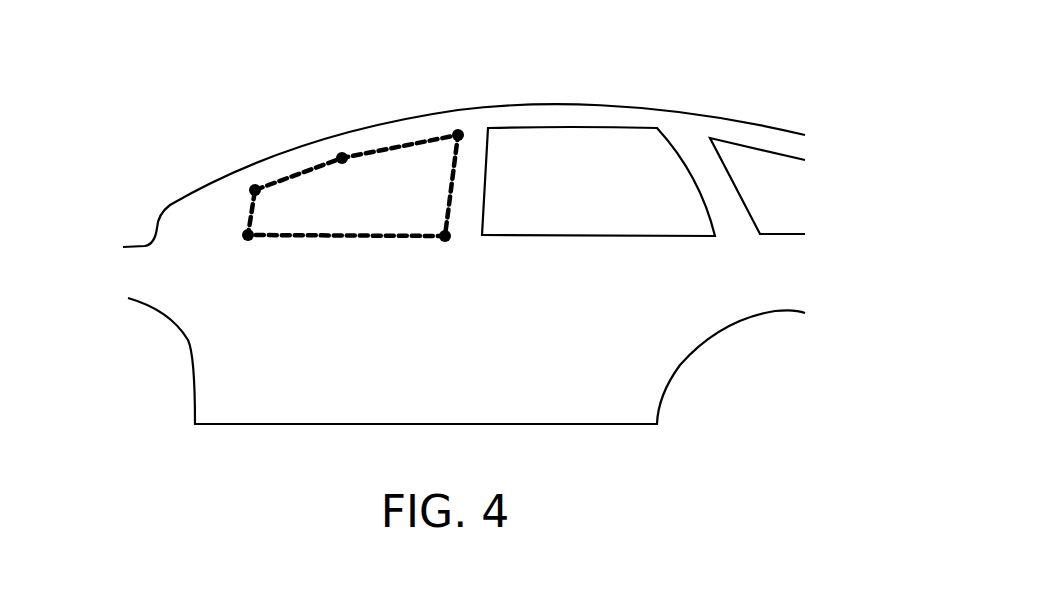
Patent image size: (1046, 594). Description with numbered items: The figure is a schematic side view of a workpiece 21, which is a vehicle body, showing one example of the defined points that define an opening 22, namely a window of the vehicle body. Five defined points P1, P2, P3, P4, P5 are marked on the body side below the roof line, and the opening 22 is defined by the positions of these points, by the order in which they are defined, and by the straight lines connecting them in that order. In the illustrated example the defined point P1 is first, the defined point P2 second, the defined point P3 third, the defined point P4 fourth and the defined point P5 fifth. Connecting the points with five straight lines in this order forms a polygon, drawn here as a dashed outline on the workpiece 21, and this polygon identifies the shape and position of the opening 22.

The workpiece 21 is at (573, 113).
The opening 22 is at (313, 230).
The defined point P1 is at (255, 188).
The defined point P2 is at (248, 241).
The defined point P3 is at (445, 242).
The defined point P4 is at (458, 133).
The defined point P5 is at (342, 157).